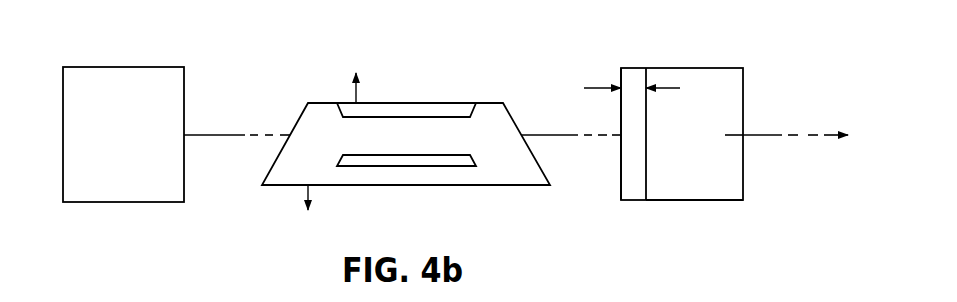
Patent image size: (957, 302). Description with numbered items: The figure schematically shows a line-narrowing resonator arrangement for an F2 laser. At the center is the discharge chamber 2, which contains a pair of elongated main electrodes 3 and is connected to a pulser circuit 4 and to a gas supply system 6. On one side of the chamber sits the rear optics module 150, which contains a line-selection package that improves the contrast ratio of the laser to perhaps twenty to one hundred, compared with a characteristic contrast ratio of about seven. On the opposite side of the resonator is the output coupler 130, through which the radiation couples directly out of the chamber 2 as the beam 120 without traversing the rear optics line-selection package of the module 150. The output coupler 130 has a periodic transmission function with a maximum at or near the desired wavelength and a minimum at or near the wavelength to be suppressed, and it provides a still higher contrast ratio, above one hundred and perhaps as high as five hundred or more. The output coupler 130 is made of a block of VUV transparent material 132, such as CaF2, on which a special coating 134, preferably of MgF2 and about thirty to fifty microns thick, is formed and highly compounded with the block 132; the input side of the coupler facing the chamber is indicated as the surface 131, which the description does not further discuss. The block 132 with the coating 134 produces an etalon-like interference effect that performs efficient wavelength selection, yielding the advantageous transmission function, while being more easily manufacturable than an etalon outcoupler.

The rear optics module 150 is at (108, 147).
The beam 120 is at (516, 166).
The discharge chamber 2 is at (442, 166).
The main electrodes 3 is at (458, 117).
The gas supply system 6 is at (308, 213).
The pulser circuit 4 is at (355, 73).
The output coupler 130 is at (691, 55).
The input surface 131 is at (619, 158).
The coating 134 is at (637, 203).
The block of VUV transparent material 132 is at (672, 203).